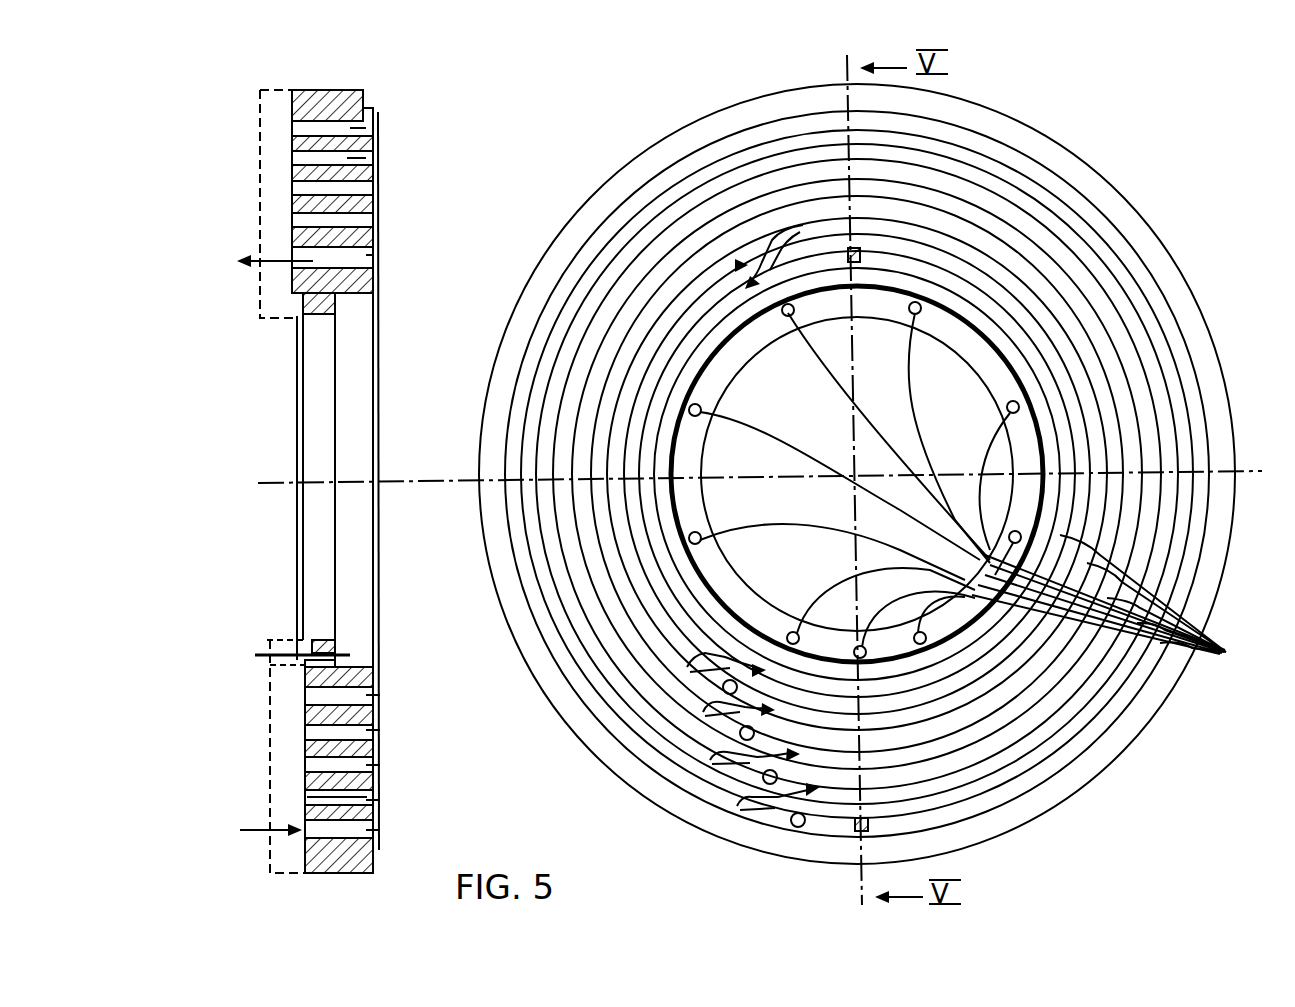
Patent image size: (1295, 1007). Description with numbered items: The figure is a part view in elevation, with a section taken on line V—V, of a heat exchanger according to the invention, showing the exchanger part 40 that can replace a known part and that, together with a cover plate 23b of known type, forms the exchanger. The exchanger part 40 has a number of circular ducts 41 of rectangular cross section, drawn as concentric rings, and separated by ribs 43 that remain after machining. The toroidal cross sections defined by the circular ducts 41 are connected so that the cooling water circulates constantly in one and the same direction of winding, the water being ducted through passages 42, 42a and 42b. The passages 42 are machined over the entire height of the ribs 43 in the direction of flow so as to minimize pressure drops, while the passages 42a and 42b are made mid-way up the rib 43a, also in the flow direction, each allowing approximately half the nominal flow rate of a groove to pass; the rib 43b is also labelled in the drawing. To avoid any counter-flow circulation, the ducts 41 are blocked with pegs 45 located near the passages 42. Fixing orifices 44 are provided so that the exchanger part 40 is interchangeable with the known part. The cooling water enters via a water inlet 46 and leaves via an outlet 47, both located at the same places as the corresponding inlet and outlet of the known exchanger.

The exchanger part 40 is at (1165, 221).
The circular ducts 41 is at (367, 255).
The passages 42 is at (705, 710).
The passage 42a is at (697, 658).
The passage 42b is at (770, 250).
The ribs 43 is at (293, 210).
The rib 43a is at (293, 237).
The outer annular layer 43b is at (738, 265).
The fixing orifices 44 is at (255, 655).
The pegs 45 is at (723, 690).
The water inlet 46 is at (240, 830).
The outlet 47 is at (267, 262).
The cover plate 23b is at (270, 855).